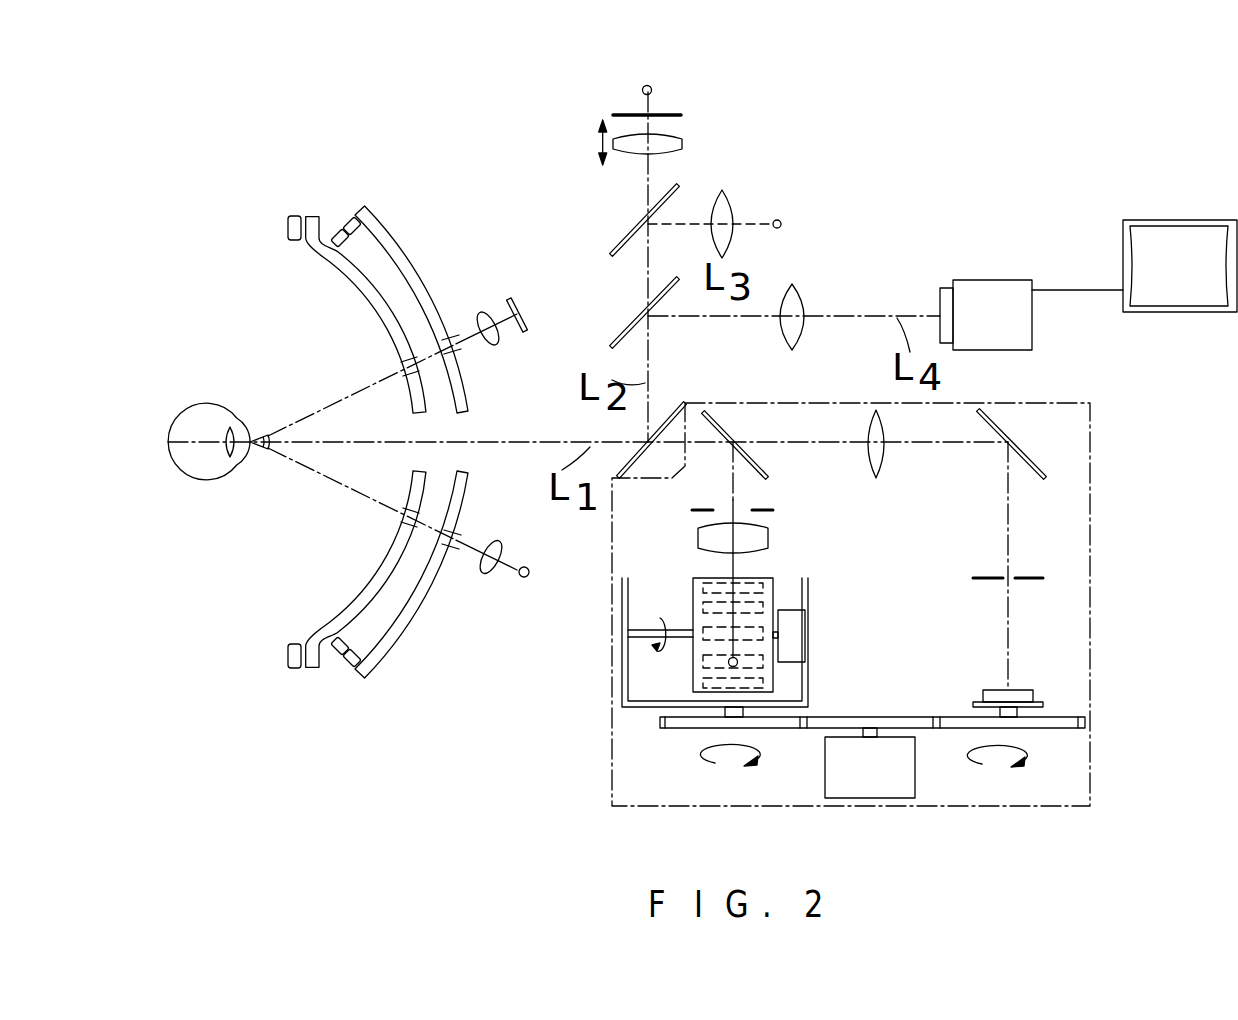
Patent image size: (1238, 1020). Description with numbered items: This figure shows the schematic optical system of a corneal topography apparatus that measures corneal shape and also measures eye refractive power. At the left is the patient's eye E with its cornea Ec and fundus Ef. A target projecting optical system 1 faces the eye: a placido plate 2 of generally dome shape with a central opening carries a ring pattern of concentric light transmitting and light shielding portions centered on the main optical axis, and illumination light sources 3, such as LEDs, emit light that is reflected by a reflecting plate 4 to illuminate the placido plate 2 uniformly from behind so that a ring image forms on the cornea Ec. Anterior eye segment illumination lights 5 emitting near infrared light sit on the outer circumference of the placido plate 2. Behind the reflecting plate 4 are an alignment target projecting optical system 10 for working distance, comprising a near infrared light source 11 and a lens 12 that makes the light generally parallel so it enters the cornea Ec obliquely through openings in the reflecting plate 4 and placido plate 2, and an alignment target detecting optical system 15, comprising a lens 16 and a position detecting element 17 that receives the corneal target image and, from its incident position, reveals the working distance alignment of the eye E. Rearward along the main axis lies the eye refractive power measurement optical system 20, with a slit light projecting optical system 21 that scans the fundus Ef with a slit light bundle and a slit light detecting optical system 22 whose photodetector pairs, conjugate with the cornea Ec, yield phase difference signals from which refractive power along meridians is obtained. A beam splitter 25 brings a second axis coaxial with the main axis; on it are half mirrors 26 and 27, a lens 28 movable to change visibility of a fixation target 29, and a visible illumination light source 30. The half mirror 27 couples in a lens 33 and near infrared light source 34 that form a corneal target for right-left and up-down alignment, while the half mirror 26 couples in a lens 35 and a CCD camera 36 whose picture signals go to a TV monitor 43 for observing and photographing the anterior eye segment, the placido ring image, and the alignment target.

The target projecting optical system 1 is at (305, 558).
The placido plate 2 is at (353, 300).
The illumination light sources 3 is at (345, 218).
The reflecting plate 4 is at (410, 655).
The anterior eye segment illumination lights 5 is at (292, 214).
The alignment target projecting optical system 10 is at (492, 645).
The light source 11 is at (524, 578).
The lens 12 is at (488, 574).
The alignment target detecting optical system 15 is at (497, 233).
The lens 16 is at (482, 312).
The position detecting element 17 is at (515, 297).
The eye refractive power measurement optical system 20 is at (1092, 415).
The slit light projecting optical system 21 is at (788, 548).
The slit light detecting optical system 22 is at (996, 621).
The beam splitter 25 is at (670, 413).
The half mirror 26 is at (622, 330).
The half mirror 27 is at (624, 250).
The lens 28 is at (665, 146).
The fixation target 29 is at (668, 113).
The illumination light source 30 is at (642, 90).
The lens 33 is at (731, 207).
The light source 34 is at (781, 228).
The lens 35 is at (796, 333).
The CCD camera 36 is at (1000, 288).
The TV monitor 43 is at (1140, 245).
The patient's eye E is at (206, 412).
The fundus Ef is at (170, 468).
The cornea Ec is at (238, 470).